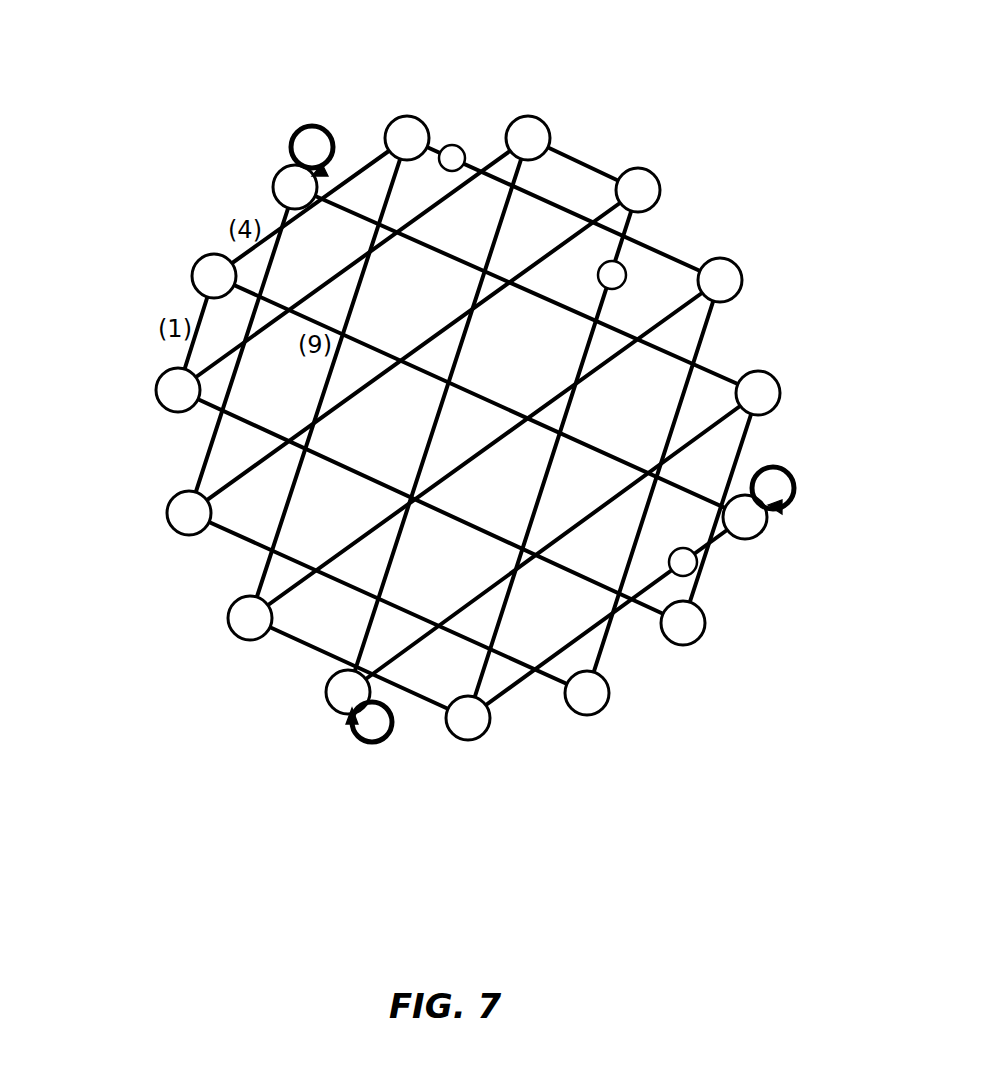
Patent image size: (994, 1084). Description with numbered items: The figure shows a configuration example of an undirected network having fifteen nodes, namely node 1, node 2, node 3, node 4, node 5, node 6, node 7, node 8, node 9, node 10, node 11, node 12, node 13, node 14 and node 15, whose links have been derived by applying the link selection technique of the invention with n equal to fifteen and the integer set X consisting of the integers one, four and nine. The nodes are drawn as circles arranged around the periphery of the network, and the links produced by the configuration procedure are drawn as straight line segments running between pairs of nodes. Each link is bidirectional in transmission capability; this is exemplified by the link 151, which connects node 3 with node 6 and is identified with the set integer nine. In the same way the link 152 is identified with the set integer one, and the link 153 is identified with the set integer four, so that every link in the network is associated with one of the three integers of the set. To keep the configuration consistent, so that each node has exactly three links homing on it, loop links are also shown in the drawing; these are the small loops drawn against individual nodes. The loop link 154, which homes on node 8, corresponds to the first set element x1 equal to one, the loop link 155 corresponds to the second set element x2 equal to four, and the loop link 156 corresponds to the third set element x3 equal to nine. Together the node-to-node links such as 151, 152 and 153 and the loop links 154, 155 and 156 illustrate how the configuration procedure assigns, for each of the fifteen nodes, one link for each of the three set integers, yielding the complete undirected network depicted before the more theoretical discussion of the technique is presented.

The node 1 is at (193, 268).
The node 2 is at (283, 166).
The node 3 is at (402, 117).
The node 4 is at (530, 117).
The node 5 is at (655, 176).
The node 6 is at (742, 280).
The node 7 is at (780, 395).
The node 8 is at (767, 522).
The node 9 is at (700, 645).
The node 10 is at (590, 715).
The node 11 is at (470, 740).
The node 12 is at (348, 714).
The node 13 is at (232, 633).
The node 14 is at (167, 515).
The node 15 is at (160, 383).
The link 151 is at (450, 146).
The link 152 is at (624, 268).
The link 153 is at (696, 573).
The loop link 154 is at (795, 487).
The loop link 155 is at (308, 128).
The loop link 156 is at (373, 743).